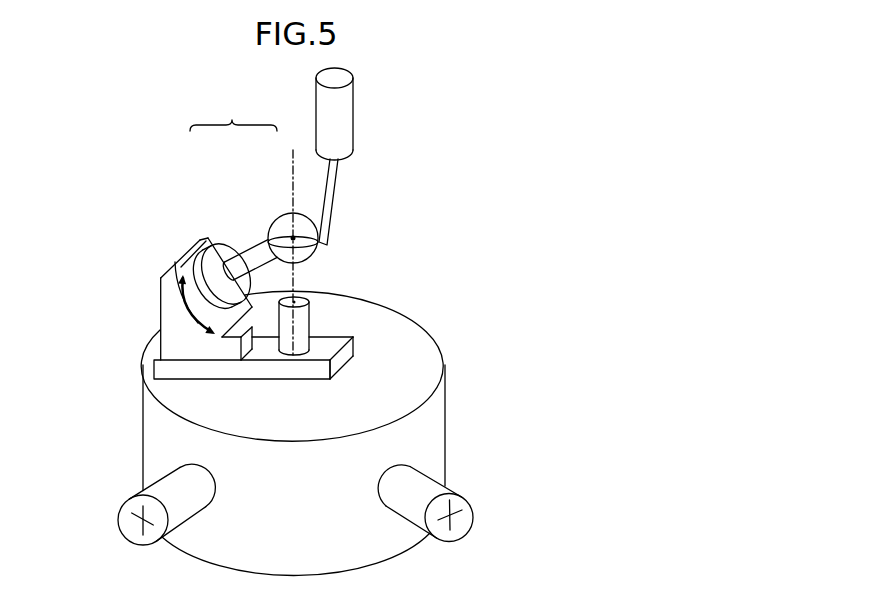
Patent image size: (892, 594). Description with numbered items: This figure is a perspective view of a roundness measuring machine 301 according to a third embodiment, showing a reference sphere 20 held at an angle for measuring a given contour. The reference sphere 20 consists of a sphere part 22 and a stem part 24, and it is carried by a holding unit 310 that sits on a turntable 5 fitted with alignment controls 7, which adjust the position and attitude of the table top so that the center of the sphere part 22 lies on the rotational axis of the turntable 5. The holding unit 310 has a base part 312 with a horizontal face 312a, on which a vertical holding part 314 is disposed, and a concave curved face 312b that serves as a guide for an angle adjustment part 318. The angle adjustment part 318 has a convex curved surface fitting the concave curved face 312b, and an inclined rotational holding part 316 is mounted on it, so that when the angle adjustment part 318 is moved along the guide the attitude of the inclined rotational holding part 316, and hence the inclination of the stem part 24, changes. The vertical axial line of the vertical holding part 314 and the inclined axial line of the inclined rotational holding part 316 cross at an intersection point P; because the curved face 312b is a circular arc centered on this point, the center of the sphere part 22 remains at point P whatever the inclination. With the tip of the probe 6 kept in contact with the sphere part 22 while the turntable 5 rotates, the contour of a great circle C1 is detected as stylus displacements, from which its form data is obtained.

The roundness measuring machine 301 is at (497, 158).
The turntable 5 is at (385, 402).
The alignment controls 7 is at (475, 518).
The base part 312 is at (348, 347).
The horizontal face 312a is at (320, 350).
The concave curved face 312b is at (252, 361).
The vertical holding part 314 is at (303, 322).
The holding unit 310 is at (150, 292).
The angle adjustment part 318 is at (203, 307).
The inclined rotational holding part 316 is at (217, 258).
The stem part 24 is at (255, 258).
The sphere part 22 is at (282, 226).
The great circle C1 is at (317, 254).
The intersection point P is at (294, 236).
The reference sphere 20 is at (233, 112).
The probe 6 is at (333, 204).